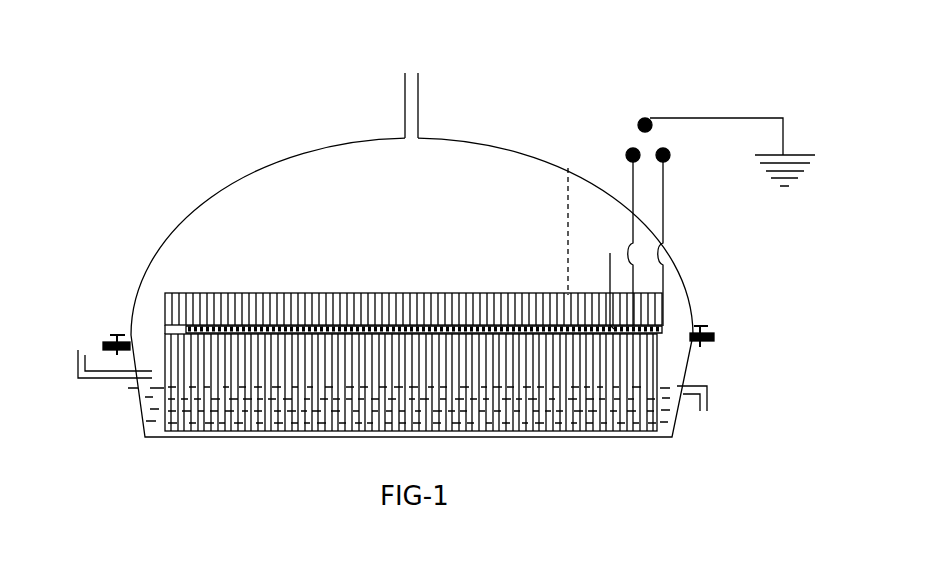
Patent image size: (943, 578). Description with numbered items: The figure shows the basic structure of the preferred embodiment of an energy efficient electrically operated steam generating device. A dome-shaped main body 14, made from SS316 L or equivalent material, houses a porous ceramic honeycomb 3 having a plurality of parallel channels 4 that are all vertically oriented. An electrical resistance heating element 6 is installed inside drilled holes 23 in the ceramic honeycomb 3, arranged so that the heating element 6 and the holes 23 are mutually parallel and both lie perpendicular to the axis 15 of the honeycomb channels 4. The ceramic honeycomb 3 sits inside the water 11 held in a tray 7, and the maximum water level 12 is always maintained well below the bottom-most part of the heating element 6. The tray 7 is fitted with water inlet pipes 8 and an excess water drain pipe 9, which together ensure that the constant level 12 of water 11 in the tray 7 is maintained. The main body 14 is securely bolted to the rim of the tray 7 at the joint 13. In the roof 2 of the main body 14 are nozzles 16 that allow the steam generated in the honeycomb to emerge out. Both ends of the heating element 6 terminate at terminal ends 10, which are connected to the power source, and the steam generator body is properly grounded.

The roof 2 is at (198, 217).
The porous ceramic honeycomb 3 is at (668, 366).
The parallel channels 4 is at (598, 290).
The electrical resistance heating element 6 is at (610, 253).
The tray 7 is at (688, 425).
The water inlet pipes 8 is at (63, 369).
The excess water drain pipe 9 is at (723, 396).
The terminal ends 10 is at (673, 331).
The water 11 is at (137, 422).
The maximum water level 12 is at (110, 392).
The joint 13 is at (88, 342).
The main body 14 is at (705, 301).
The axis of honeycomb channel 15 is at (569, 221).
The nozzles 16 is at (433, 104).
The drilled holes 23 is at (174, 320).